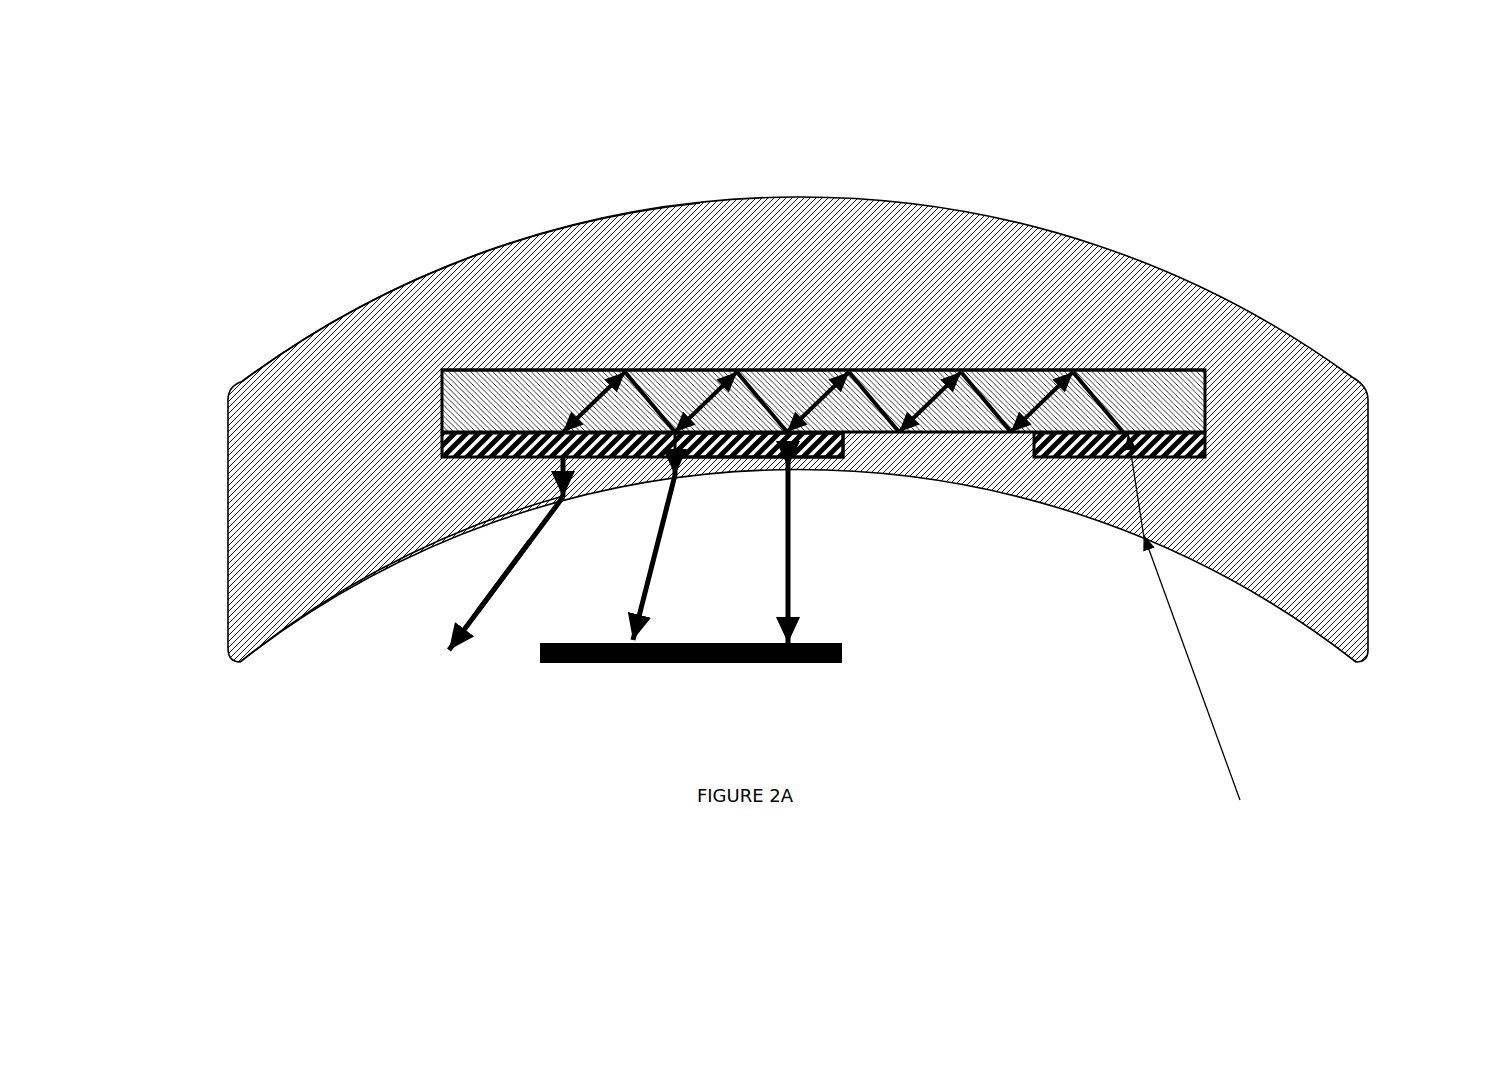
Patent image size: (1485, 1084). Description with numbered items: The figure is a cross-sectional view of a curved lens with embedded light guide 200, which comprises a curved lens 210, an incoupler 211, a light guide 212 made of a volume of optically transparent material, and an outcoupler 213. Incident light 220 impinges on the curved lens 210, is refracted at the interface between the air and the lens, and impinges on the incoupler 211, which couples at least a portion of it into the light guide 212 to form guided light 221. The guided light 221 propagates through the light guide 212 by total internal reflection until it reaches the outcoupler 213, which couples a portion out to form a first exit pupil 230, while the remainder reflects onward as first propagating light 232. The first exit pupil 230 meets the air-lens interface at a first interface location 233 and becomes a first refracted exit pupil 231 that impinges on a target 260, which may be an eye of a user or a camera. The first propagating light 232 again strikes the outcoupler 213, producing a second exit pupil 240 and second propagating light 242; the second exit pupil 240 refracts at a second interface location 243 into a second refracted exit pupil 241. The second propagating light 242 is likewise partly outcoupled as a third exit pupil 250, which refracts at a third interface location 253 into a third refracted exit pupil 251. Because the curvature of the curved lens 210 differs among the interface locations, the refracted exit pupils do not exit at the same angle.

The curved lens with embedded light guide 200 is at (136, 132).
The curved lens 210 is at (1347, 417).
The incoupler 211 is at (1205, 444).
The light guide 212 is at (487, 393).
The outcoupler 213 is at (440, 443).
The incident light 220 is at (1198, 680).
The guided light 221 is at (1105, 370).
The first exit pupil 230 is at (843, 455).
The first refracted exit pupil 231 is at (790, 555).
The first propagating light 232 is at (757, 390).
The first interface location 233 is at (790, 480).
The second exit pupil 240 is at (688, 456).
The second refracted exit pupil 241 is at (662, 533).
The second propagating light 242 is at (650, 383).
The second interface location 243 is at (663, 485).
The third exit pupil 250 is at (565, 462).
The third refracted exit pupil 251 is at (478, 617).
The third interface location 253 is at (563, 498).
The target 260 is at (788, 663).